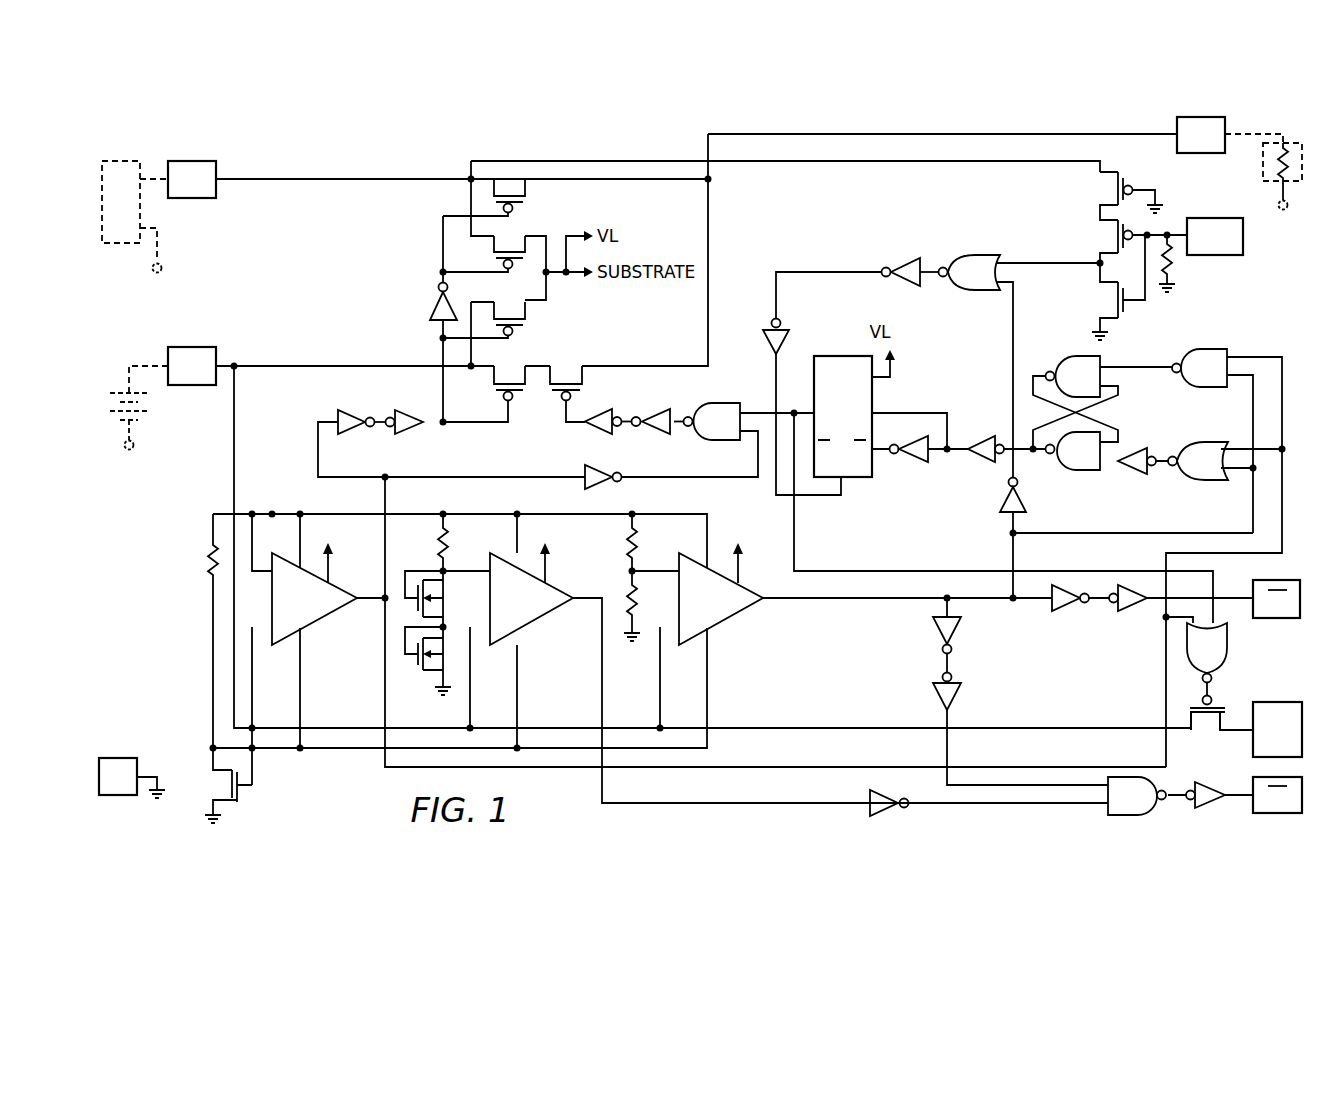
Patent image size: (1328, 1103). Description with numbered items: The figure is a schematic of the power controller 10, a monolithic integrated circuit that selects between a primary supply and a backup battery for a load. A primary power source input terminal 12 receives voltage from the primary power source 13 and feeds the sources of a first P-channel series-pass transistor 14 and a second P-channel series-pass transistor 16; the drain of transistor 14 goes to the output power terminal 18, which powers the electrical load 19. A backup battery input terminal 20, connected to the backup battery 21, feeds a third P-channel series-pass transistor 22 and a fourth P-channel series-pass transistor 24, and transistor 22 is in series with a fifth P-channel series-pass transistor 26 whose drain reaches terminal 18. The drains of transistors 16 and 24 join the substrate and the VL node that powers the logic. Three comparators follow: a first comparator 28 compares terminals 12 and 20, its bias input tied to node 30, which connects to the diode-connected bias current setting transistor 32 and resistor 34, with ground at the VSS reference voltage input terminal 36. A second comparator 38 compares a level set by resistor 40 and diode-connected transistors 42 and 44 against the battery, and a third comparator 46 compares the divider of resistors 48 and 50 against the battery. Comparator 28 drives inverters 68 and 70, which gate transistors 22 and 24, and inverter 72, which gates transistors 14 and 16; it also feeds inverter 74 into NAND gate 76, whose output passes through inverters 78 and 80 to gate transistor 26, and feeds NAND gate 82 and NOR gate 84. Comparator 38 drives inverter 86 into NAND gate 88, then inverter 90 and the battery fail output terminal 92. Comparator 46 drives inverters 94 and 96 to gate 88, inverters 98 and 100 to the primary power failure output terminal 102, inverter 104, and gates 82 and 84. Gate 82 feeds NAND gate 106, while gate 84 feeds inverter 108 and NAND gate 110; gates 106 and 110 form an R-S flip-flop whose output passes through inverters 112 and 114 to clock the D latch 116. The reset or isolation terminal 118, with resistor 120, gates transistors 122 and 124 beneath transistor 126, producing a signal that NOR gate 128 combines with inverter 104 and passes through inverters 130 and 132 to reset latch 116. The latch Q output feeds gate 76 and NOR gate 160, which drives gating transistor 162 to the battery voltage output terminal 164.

The power controller 10 is at (235, 114).
The primary power source input terminal 12 is at (195, 160).
The primary power source 13 is at (125, 160).
The first P-channel series-pass transistor 14 is at (530, 198).
The second P-channel series-pass transistor 16 is at (494, 258).
The output power terminal 18 is at (1224, 118).
The electrical load 19 is at (1297, 143).
The backup battery input terminal 20 is at (182, 347).
The backup battery 21 is at (118, 392).
The third P-channel series-pass transistor 22 is at (490, 390).
The fourth P-channel series-pass transistor 24 is at (530, 321).
The fifth P-channel series-pass transistor 26 is at (576, 372).
The first comparator circuit 28 is at (312, 624).
The node 30 is at (358, 750).
The N-channel bias current setting transistor 32 is at (246, 796).
The resistor 34 is at (210, 560).
The VSS reference voltage input terminal 36 is at (122, 757).
The second comparator 38 is at (532, 626).
The resistor 40 is at (448, 533).
The first N-channel transistor 42 is at (418, 580).
The second N-channel transistor 44 is at (417, 666).
The third comparator 46 is at (728, 628).
The resistor 48 is at (638, 533).
The resistor 50 is at (637, 596).
The inverter 68 is at (340, 411).
The inverter 70 is at (400, 410).
The inverter 72 is at (430, 300).
The inverter 74 is at (590, 463).
The NAND gate 76 is at (716, 402).
The inverter 78 is at (656, 437).
The inverter 80 is at (612, 408).
The NAND gate 82 is at (1226, 349).
The NOR gate 84 is at (1210, 442).
The inverter 86 is at (885, 812).
The NAND gate 88 is at (1128, 816).
The inverter 90 is at (1210, 808).
The battery fail output terminal 92 is at (1278, 814).
The inverter 94 is at (932, 638).
The inverter 96 is at (932, 698).
The inverter 98 is at (1060, 614).
The inverter 100 is at (1126, 614).
The primary power failure output terminal 102 is at (1280, 620).
The inverter 104 is at (1000, 508).
The NAND gate 106 is at (1068, 352).
The inverter 108 is at (1142, 446).
The NAND gate 110 is at (1078, 462).
The inverter 112 is at (985, 462).
The inverter 114 is at (918, 462).
The D latch 116 is at (848, 356).
The reset or isolation terminal 118 is at (1212, 218).
The resistor 120 is at (1175, 258).
The N-channel transistor 122 is at (1110, 298).
The P-channel transistor 124 is at (1112, 237).
The P-channel transistor 126 is at (1112, 188).
The NOR gate 128 is at (975, 256).
The first inverter 130 is at (905, 260).
The inverter 132 is at (795, 330).
The NOR gate 160 is at (1226, 658).
The P-channel gating transistor 162 is at (1200, 718).
The battery voltage output terminal 164 is at (1280, 702).